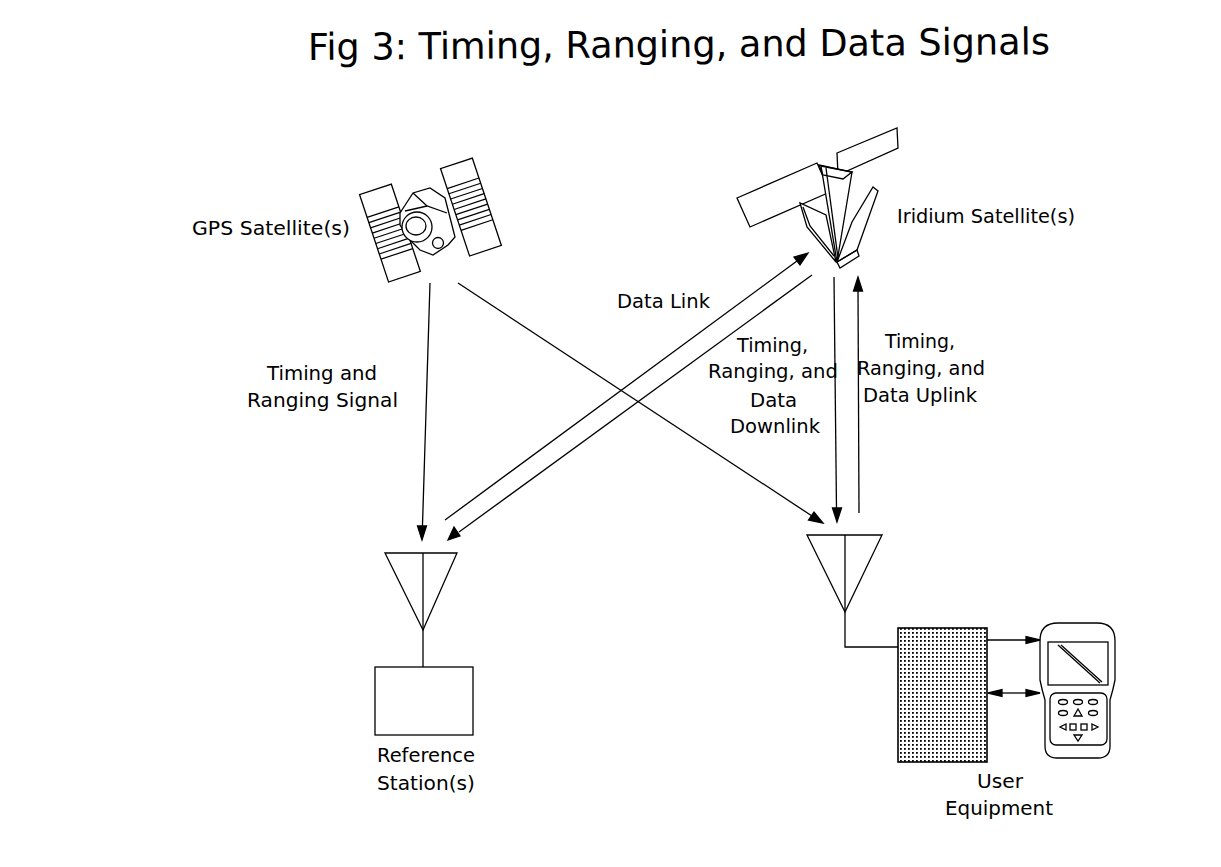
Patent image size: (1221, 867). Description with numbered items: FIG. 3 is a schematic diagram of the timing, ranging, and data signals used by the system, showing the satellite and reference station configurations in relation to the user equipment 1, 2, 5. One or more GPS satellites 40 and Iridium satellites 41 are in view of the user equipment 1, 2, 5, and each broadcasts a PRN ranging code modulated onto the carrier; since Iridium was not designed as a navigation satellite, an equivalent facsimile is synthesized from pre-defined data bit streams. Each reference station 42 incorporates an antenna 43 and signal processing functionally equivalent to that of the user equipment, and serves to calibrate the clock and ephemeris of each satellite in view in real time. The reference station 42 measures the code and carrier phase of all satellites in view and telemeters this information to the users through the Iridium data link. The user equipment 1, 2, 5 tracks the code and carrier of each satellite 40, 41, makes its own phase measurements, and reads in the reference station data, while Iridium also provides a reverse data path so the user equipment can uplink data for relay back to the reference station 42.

The GPS satellite 40 is at (483, 210).
The Iridium satellite 41 is at (858, 207).
The antenna 43 is at (433, 577).
The reference station 42 is at (437, 713).
The user equipment 5 is at (876, 584).
The user equipment 2 is at (898, 688).
The user equipment 1 is at (1102, 707).